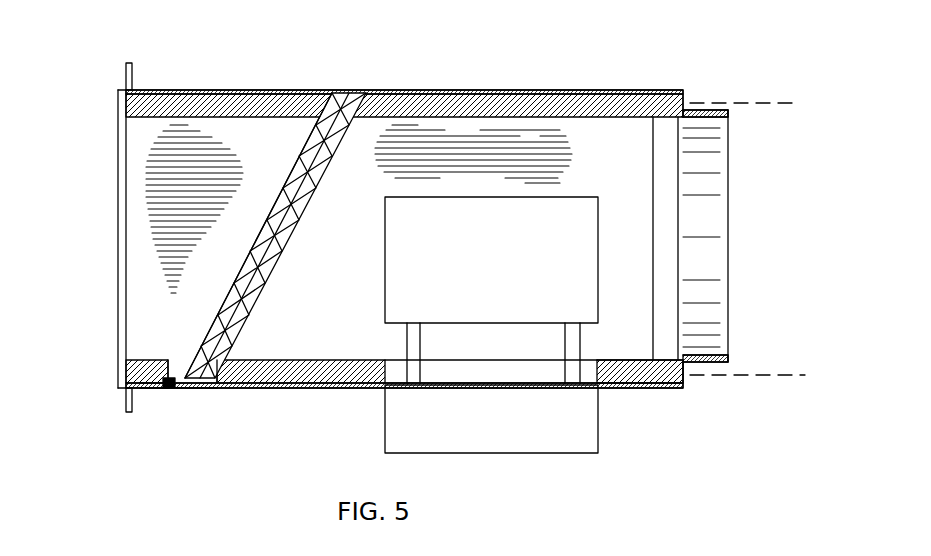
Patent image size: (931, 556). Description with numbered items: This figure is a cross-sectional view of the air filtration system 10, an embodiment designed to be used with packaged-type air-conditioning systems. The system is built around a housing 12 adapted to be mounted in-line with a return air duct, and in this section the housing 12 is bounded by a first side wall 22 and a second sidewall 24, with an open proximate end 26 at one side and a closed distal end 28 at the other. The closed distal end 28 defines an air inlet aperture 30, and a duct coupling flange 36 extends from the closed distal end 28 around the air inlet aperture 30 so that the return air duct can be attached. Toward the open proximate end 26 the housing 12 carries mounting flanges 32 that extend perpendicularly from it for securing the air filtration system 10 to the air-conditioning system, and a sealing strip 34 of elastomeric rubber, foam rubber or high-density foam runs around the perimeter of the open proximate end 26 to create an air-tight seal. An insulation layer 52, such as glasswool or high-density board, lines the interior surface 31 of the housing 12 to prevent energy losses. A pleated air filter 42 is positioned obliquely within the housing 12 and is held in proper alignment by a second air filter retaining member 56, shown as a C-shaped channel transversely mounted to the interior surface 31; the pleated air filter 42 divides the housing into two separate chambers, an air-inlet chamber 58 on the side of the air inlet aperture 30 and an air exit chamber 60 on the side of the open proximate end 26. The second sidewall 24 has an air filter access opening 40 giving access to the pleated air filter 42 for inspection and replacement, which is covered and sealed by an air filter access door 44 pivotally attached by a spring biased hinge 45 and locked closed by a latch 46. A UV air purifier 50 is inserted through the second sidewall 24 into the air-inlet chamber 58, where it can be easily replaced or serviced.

The air filtration system 10 is at (670, 428).
The housing 12 is at (508, 88).
The first side wall 22 is at (410, 90).
The second sidewall 24 is at (623, 388).
The open proximate end 26 is at (112, 162).
The closed distal end 28 is at (690, 378).
The air inlet aperture 30 is at (683, 167).
The interior surface 31 is at (643, 362).
The mounting flange 32 is at (130, 63).
The sealing strip 34 is at (120, 323).
The duct coupling flange 36 is at (697, 110).
The air filter access opening 40 is at (181, 393).
The pleated air filter 42 is at (348, 100).
The air filter access door 44 is at (205, 388).
The spring biased hinge 45 is at (218, 388).
The latch 46 is at (147, 388).
The UV air purifier 50 is at (467, 438).
The insulation layer 52 is at (200, 100).
The second air filter retaining member 56 is at (325, 115).
The air-inlet chamber 58 is at (625, 238).
The air exit chamber 60 is at (168, 280).